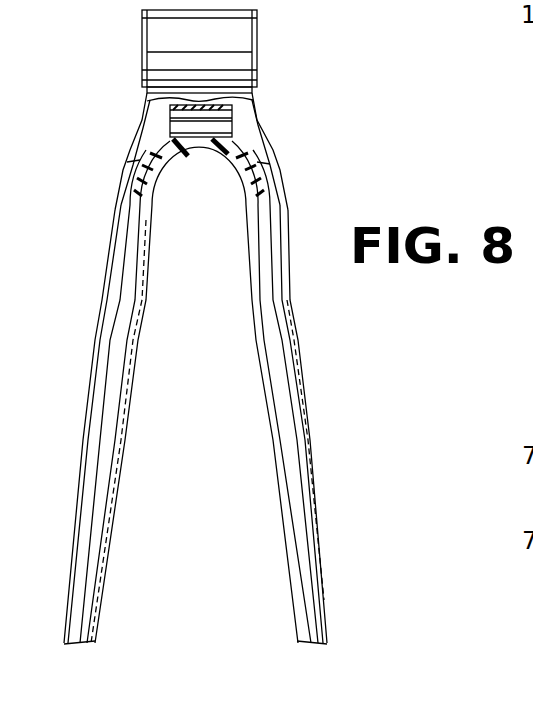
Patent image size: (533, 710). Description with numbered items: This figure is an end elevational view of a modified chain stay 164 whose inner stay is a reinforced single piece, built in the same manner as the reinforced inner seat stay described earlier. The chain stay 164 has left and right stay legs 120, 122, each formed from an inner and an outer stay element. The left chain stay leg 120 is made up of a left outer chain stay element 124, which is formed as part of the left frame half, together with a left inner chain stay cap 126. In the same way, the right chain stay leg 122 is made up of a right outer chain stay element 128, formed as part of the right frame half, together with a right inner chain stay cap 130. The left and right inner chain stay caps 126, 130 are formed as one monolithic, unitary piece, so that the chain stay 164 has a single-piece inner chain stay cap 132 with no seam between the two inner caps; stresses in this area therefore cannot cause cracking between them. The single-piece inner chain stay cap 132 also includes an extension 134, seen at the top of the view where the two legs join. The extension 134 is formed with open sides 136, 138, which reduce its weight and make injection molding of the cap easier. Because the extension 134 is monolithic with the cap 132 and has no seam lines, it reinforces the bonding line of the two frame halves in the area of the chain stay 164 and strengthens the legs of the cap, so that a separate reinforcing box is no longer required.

The left chain stay leg 120 is at (116, 537).
The right chain stay leg 122 is at (263, 447).
The left outer chain stay element 124 is at (103, 312).
The left inner chain stay cap 126 is at (134, 293).
The right outer chain stay element 128 is at (290, 322).
The right inner chain stay cap 130 is at (268, 358).
The single-piece inner chain stay cap 132 is at (201, 153).
The extension 134 is at (213, 110).
The open side 136 is at (170, 130).
The open side 138 is at (233, 128).
The modified chain stay 164 is at (291, 185).